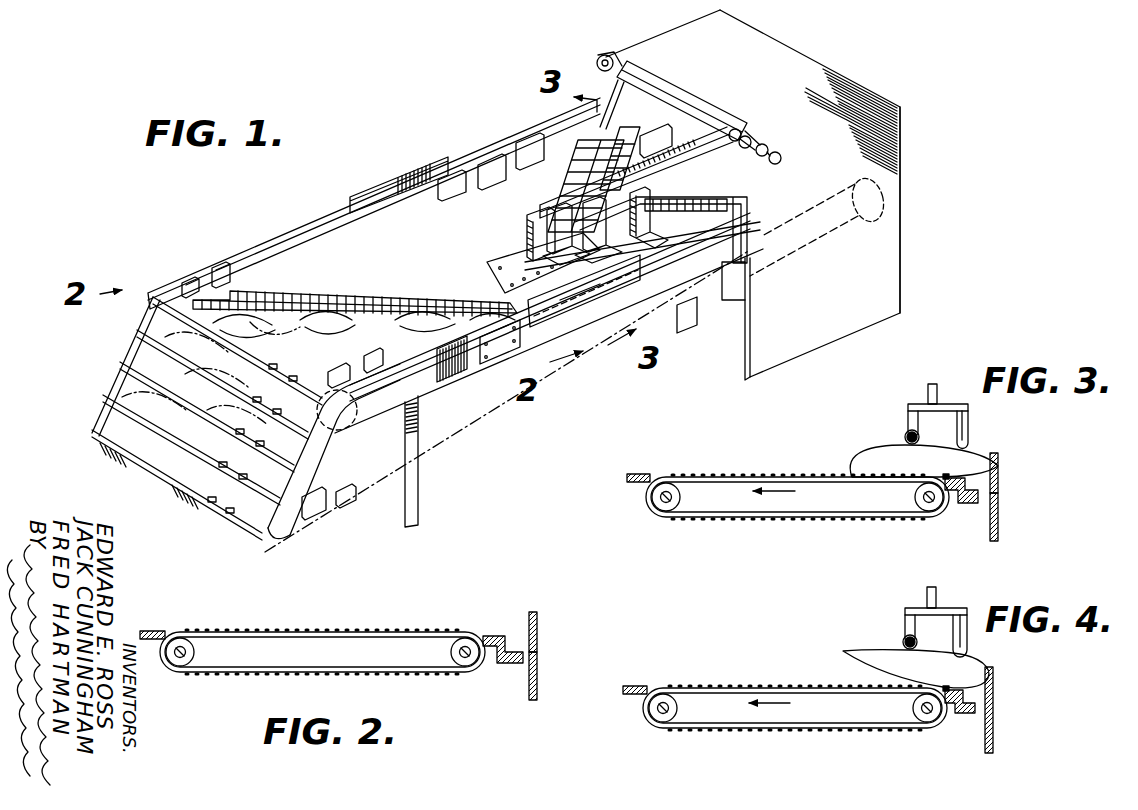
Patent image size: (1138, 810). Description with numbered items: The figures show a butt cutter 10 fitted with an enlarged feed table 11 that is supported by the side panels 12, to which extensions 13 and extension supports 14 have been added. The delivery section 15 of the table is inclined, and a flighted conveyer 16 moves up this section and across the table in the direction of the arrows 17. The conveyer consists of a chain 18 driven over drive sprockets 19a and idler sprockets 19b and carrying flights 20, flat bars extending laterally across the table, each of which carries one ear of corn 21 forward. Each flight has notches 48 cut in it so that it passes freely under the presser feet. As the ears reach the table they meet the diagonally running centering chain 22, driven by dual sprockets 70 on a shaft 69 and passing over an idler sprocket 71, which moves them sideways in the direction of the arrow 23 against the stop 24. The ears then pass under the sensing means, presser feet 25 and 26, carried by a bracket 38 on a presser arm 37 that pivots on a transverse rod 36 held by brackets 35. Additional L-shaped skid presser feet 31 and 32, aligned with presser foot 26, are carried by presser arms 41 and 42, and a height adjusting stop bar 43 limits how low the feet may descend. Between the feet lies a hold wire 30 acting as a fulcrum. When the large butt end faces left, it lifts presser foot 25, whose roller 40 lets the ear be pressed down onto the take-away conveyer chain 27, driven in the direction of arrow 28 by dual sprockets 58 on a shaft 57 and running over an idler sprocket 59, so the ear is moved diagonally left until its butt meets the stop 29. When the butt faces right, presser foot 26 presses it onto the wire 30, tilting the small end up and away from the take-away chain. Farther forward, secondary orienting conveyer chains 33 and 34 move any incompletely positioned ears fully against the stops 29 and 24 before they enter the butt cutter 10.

In FIG. 1, the butt cutter 10 is at (832, 52).
In FIG. 1, the feed table 11 is at (338, 243).
In FIG. 2, the feed table 11 is at (492, 640).
In FIG. 3, the feed table 11 is at (967, 505).
In FIG. 4, the feed table 11 is at (964, 717).
In FIG. 1, the side panels 12 is at (880, 250).
In FIG. 2, the side panels 12 is at (540, 676).
In FIG. 3, the side panels 12 is at (1000, 520).
In FIG. 1, the extensions 13 is at (453, 380).
In FIG. 1, the extension supports 14 is at (420, 503).
In FIG. 1, the delivery section 15 is at (127, 392).
In FIG. 1, the flighted conveyer 16 is at (680, 322).
In FIG. 1, the arrows 17 is at (318, 208).
In FIG. 1, the chain 18 is at (268, 250).
In FIG. 1, the drive sprockets 19a is at (885, 202).
In FIG. 1, the idler sprockets 19b is at (335, 430).
In FIG. 1, the flights 20 is at (180, 288).
In FIG. 1, the ears of corn 21 is at (212, 292).
In FIG. 3, the ears of corn 21 is at (856, 455).
In FIG. 4, the ears of corn 21 is at (851, 655).
In FIG. 1, the centering chain 22 is at (252, 283).
In FIG. 2, the centering chain 22 is at (397, 629).
In FIG. 1, the arrow 23 is at (392, 281).
In FIG. 2, the arrow 23 is at (338, 644).
In FIG. 1, the stop 24 is at (578, 318).
In FIG. 2, the stop 24 is at (540, 624).
In FIG. 3, the stop 24 is at (1000, 472).
In FIG. 4, the stop 24 is at (995, 677).
In FIG. 1, the presser foot 25 is at (510, 262).
In FIG. 3, the presser foot 25 is at (908, 415).
In FIG. 4, the presser foot 25 is at (905, 625).
In FIG. 1, the presser foot 26 is at (520, 262).
In FIG. 3, the presser foot 26 is at (970, 420).
In FIG. 4, the presser foot 26 is at (968, 632).
In FIG. 1, the take-away conveyer chain 27 is at (533, 202).
In FIG. 3, the take-away conveyer chain 27 is at (773, 476).
In FIG. 4, the take-away conveyer chain 27 is at (752, 686).
In FIG. 1, the arrow 28 is at (540, 195).
In FIG. 3, the arrow 28 is at (777, 490).
In FIG. 4, the arrow 28 is at (768, 700).
In FIG. 1, the stop 29 is at (392, 178).
In FIG. 1, the hold wire 30 is at (660, 233).
In FIG. 3, the hold wire 30 is at (950, 477).
In FIG. 4, the hold wire 30 is at (943, 688).
In FIG. 1, the presser foot 31 is at (578, 307).
In FIG. 1, the presser foot 32 is at (650, 236).
In FIG. 1, the secondary orienting conveyer chain 33 is at (668, 128).
In FIG. 1, the secondary orienting conveyer chain 34 is at (750, 215).
In FIG. 1, the brackets 35 is at (602, 56).
In FIG. 1, the transverse rod 36 is at (640, 76).
In FIG. 1, the presser arm 37 is at (707, 133).
In FIG. 3, the presser arm 37 is at (928, 392).
In FIG. 4, the presser arm 37 is at (927, 597).
In FIG. 3, the bracket 38 is at (948, 402).
In FIG. 4, the bracket 38 is at (951, 610).
In FIG. 3, the roller 40 is at (907, 432).
In FIG. 4, the roller 40 is at (904, 639).
In FIG. 1, the presser arm 41 is at (764, 142).
In FIG. 1, the presser arm 42 is at (778, 152).
In FIG. 1, the height adjusting stop bar 43 is at (748, 268).
In FIG. 1, the notches 48 is at (303, 358).
In FIG. 3, the shaft 57 is at (663, 502).
In FIG. 4, the shaft 57 is at (660, 713).
In FIG. 3, the dual sprockets 58 is at (647, 500).
In FIG. 4, the dual sprockets 58 is at (643, 712).
In FIG. 3, the idler sprocket 59 is at (918, 498).
In FIG. 4, the idler sprocket 59 is at (915, 710).
In FIG. 2, the shaft 69 is at (466, 668).
In FIG. 2, the dual sprockets 70 is at (457, 652).
In FIG. 2, the idler sprocket 71 is at (197, 652).